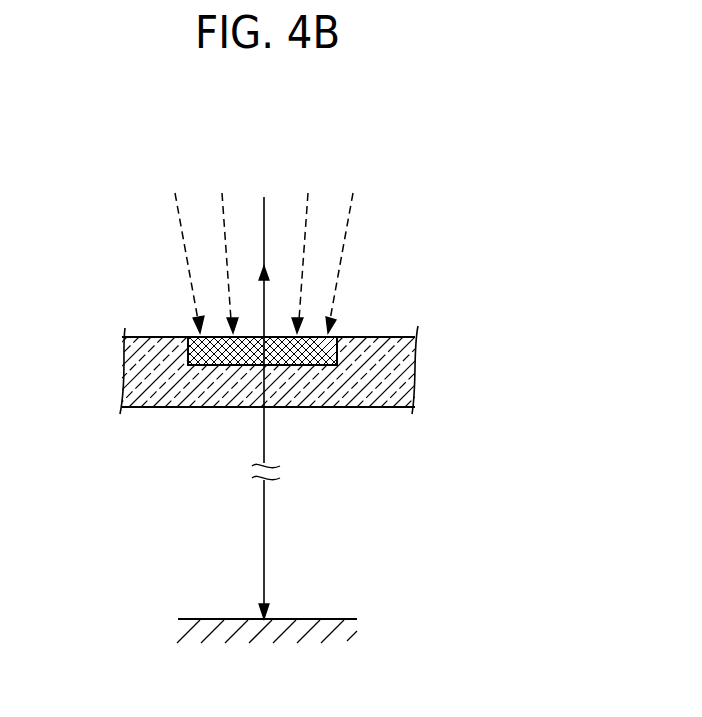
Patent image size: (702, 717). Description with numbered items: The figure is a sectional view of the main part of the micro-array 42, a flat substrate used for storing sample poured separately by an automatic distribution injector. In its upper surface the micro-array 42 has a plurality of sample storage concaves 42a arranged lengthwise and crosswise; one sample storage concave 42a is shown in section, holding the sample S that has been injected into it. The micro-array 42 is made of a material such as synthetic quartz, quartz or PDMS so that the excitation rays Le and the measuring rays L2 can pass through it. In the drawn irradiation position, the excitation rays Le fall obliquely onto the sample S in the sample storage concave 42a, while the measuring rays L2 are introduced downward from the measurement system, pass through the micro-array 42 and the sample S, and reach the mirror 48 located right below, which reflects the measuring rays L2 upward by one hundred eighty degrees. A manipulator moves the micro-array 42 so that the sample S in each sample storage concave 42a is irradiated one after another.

The micro-array 42 is at (382, 327).
The sample storage concave 42a is at (195, 333).
The sample S is at (312, 365).
The measuring rays L2 is at (264, 220).
The excitation rays Le is at (350, 223).
The mirror 48 is at (308, 618).